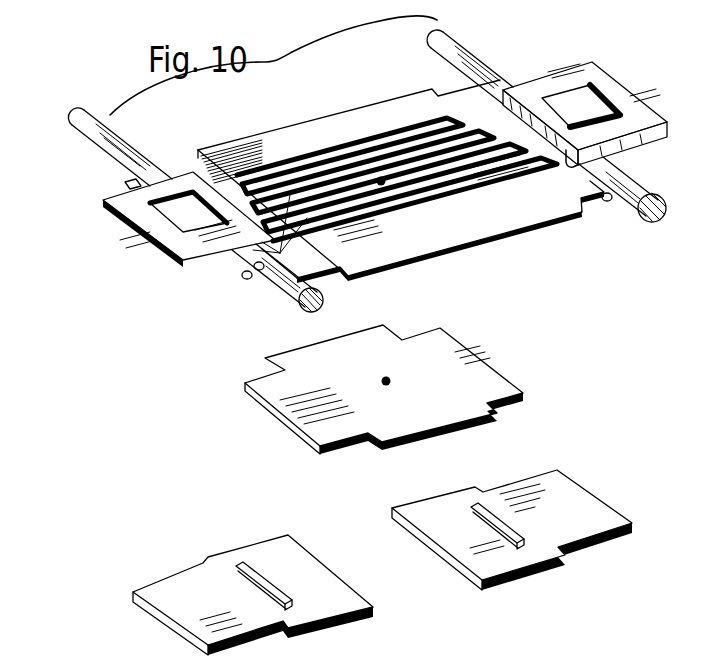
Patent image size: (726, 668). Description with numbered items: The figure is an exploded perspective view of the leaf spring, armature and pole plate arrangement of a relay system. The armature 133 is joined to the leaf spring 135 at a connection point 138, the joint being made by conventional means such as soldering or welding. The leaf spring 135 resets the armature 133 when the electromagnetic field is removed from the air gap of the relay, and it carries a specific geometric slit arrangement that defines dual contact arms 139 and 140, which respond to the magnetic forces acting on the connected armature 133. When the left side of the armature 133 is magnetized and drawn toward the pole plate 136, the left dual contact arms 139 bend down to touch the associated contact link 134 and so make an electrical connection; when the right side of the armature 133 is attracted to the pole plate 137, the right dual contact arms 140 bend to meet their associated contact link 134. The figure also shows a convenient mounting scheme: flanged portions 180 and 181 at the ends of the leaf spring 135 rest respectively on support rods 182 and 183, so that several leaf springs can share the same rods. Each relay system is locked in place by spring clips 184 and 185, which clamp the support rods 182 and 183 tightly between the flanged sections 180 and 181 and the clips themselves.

The armature 133 is at (297, 410).
The contact link 134 is at (292, 602).
The leaf spring 135 is at (273, 140).
The pole plate 136 is at (197, 608).
The pole plate 137 is at (582, 528).
The connection point 138 is at (381, 184).
The dual contact arms 139 is at (257, 278).
The dual contact arms 140 is at (468, 152).
The flanged portion 180 is at (146, 219).
The flanged portion 181 is at (612, 90).
The support rod 182 is at (72, 140).
The support rod 183 is at (450, 46).
The spring clip 184 is at (126, 184).
The spring clip 185 is at (610, 201).